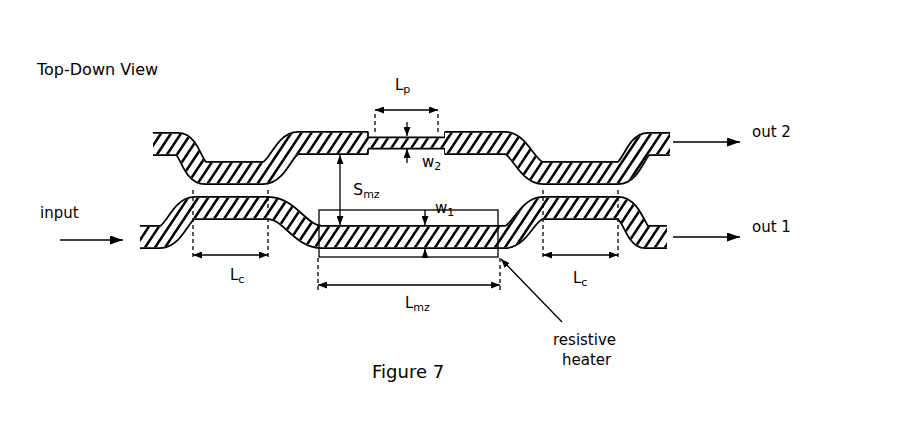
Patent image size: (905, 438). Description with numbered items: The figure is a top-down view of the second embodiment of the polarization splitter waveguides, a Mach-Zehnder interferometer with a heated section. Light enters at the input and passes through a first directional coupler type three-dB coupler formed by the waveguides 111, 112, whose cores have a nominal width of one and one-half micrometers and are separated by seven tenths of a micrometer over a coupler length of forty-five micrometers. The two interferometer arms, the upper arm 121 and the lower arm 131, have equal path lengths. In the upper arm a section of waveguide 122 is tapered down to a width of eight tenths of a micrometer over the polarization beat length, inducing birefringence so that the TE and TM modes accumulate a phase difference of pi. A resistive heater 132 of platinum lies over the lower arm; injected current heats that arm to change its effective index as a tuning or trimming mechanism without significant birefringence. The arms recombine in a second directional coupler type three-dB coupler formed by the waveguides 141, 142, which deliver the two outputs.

The directional coupler type 3-dB coupler 111 is at (192, 155).
The directional coupler type 3-dB coupler 112 is at (152, 250).
The first interferometer arm waveguide 121 is at (300, 138).
The section of waveguide 122 is at (377, 140).
The second interferometer arm waveguide 131 is at (300, 247).
The resistive heater 132 is at (452, 243).
The directional coupler type 3-dB coupler 141 is at (585, 160).
The directional coupler type 3-dB coupler 142 is at (645, 250).